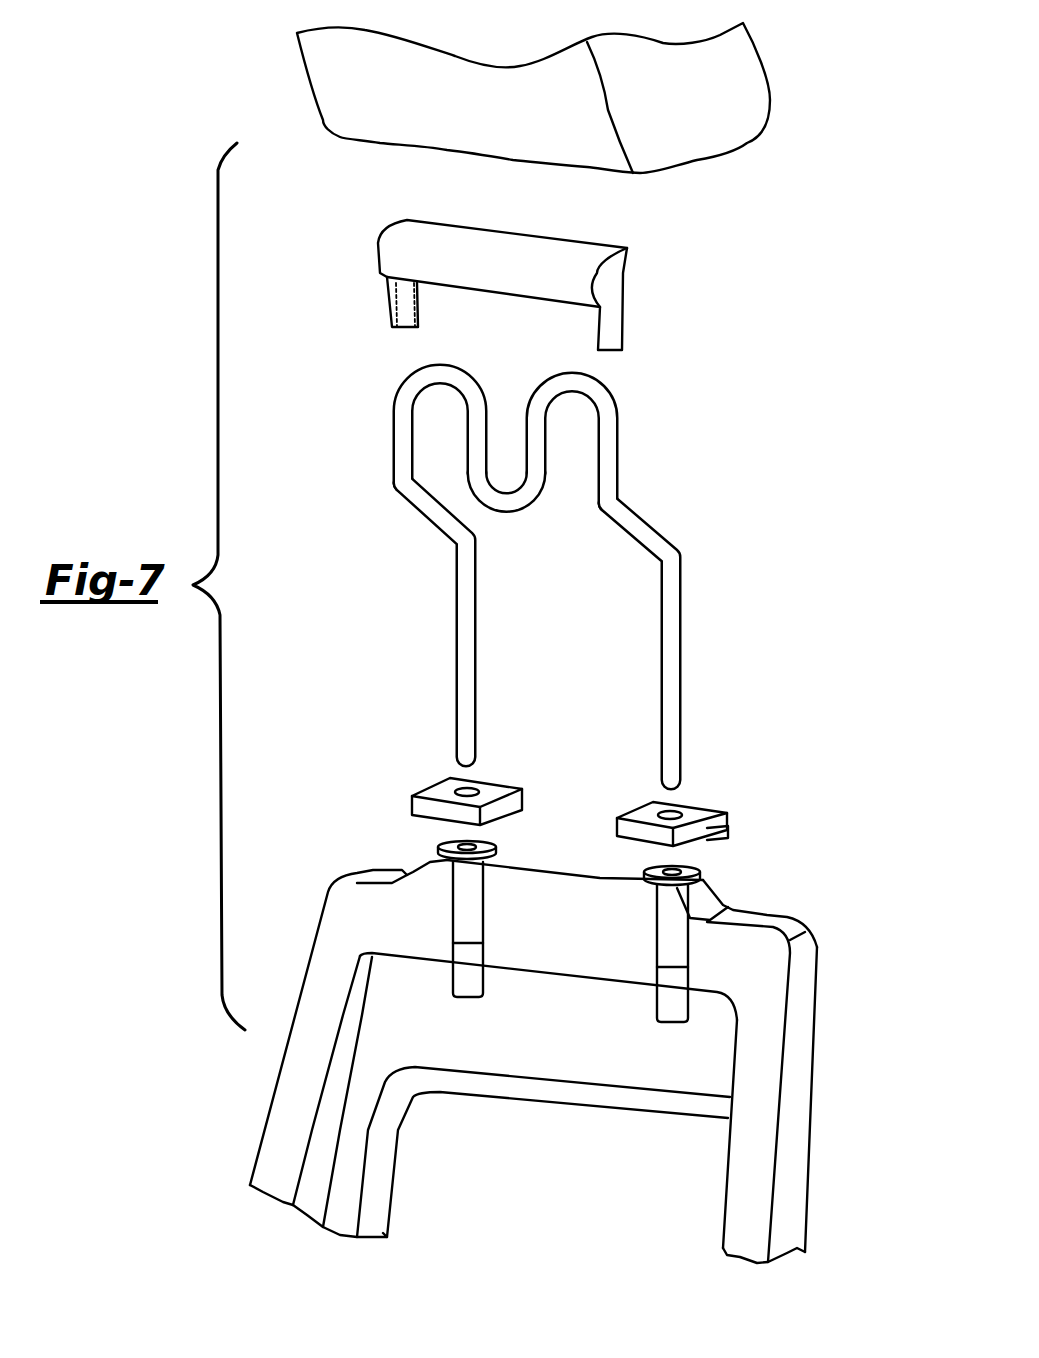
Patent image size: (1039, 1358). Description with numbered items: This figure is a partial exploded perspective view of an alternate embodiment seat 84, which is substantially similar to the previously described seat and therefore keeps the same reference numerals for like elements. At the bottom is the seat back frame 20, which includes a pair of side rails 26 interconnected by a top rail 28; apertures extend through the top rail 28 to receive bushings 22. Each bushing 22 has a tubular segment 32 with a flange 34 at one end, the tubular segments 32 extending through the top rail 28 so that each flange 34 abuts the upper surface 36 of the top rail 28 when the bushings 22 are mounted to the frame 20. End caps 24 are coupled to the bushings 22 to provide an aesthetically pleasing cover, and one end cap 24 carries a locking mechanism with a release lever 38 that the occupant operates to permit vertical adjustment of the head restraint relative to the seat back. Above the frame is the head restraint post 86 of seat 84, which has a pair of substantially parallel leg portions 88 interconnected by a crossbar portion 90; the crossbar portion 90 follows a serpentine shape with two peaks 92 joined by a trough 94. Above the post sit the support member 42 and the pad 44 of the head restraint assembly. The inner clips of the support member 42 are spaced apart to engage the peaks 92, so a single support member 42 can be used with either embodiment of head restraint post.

The frame 20 is at (576, 1037).
The bushing 22 is at (548, 966).
The end cap 24 is at (424, 782).
The side rail 26 is at (790, 1157).
The top rail 28 is at (553, 954).
The tubular segment 32 is at (463, 977).
The flange 34 is at (440, 857).
The upper surface 36 is at (540, 863).
The release lever 38 is at (730, 834).
The support member 42 is at (636, 287).
The pad 44 is at (700, 146).
The alternate embodiment seat 84 is at (614, 600).
The head restraint post 86 is at (561, 556).
The leg portion 88 is at (672, 672).
The crossbar portion 90 is at (514, 518).
The peak 92 is at (430, 368).
The trough 94 is at (525, 498).